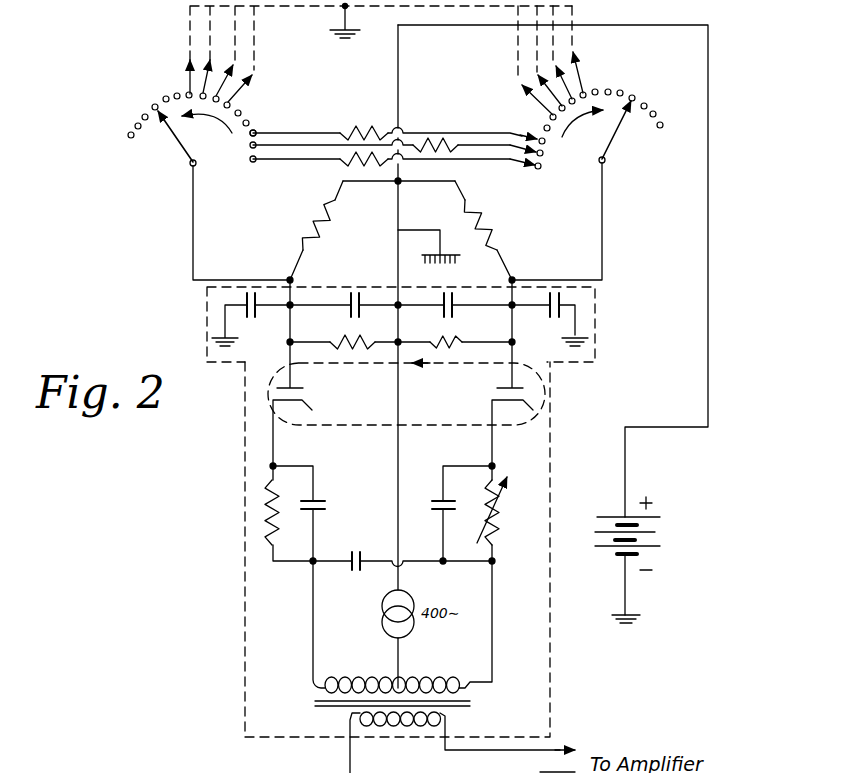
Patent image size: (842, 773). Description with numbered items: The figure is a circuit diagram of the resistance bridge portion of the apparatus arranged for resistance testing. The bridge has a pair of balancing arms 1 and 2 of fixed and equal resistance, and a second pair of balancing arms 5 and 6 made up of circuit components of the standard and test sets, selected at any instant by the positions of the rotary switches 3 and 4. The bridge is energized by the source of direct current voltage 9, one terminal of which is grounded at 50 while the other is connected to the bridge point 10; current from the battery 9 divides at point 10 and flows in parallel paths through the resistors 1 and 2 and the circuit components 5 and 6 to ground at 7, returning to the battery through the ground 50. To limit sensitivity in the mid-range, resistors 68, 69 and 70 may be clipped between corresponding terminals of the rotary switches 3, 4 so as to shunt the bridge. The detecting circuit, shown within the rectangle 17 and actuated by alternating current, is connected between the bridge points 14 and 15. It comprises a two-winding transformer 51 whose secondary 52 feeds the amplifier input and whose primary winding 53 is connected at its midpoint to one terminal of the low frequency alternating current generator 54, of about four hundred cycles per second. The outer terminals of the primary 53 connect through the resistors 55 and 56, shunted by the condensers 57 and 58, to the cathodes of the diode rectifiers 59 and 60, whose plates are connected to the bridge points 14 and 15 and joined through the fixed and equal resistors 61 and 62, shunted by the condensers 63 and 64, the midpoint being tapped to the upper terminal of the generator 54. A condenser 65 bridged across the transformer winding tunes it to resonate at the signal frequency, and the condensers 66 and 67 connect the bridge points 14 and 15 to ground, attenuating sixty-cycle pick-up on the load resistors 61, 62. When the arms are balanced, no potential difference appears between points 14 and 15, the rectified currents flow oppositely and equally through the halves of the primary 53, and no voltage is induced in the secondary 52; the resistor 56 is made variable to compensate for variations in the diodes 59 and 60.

The balancing arm 1 is at (314, 220).
The balancing arm 2 is at (490, 233).
The rotary switch 3 is at (186, 163).
The rotary switch 4 is at (608, 160).
The balancing arm 5 is at (192, 42).
The balancing arm 6 is at (571, 18).
The ground 7 is at (337, 37).
The source of direct current voltage 9 is at (657, 543).
The bridge point 10 is at (398, 186).
The bridge point 14 is at (287, 278).
The bridge point 15 is at (515, 278).
The rectangle 17 is at (242, 663).
The ground 50 is at (636, 612).
The two-winding transformer 51 is at (345, 709).
The secondary winding 52 is at (452, 723).
The primary winding 53 is at (452, 660).
The low frequency alternating current generator 54 is at (380, 623).
The resistor 55 is at (262, 515).
The variable resistor 56 is at (500, 528).
The condenser 57 is at (340, 490).
The condenser 58 is at (440, 497).
The diode rectifier 59 is at (303, 392).
The diode rectifier 60 is at (493, 392).
The resistor 61 is at (345, 336).
The resistor 62 is at (458, 338).
The condenser 63 is at (360, 283).
The condenser 64 is at (455, 297).
The condenser 65 is at (362, 540).
The condenser 66 is at (213, 305).
The condenser 67 is at (587, 298).
The resistor 68 is at (372, 126).
The resistor 69 is at (441, 141).
The resistor 70 is at (345, 168).